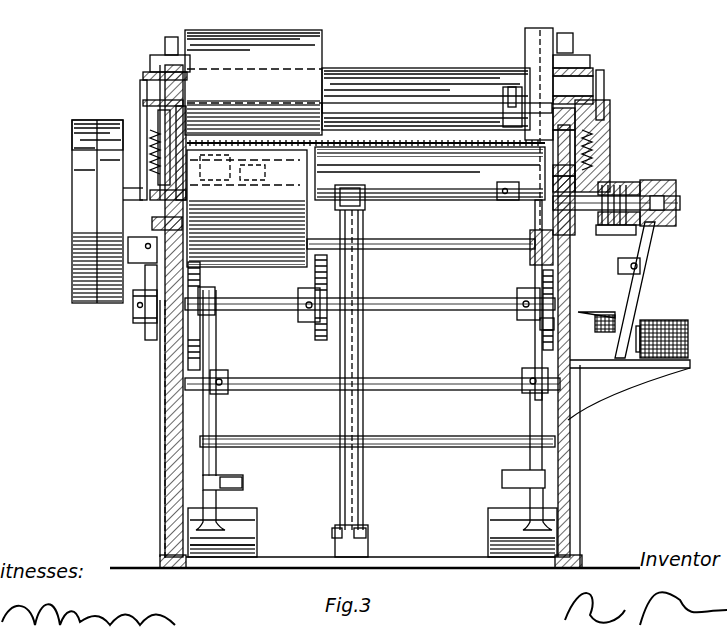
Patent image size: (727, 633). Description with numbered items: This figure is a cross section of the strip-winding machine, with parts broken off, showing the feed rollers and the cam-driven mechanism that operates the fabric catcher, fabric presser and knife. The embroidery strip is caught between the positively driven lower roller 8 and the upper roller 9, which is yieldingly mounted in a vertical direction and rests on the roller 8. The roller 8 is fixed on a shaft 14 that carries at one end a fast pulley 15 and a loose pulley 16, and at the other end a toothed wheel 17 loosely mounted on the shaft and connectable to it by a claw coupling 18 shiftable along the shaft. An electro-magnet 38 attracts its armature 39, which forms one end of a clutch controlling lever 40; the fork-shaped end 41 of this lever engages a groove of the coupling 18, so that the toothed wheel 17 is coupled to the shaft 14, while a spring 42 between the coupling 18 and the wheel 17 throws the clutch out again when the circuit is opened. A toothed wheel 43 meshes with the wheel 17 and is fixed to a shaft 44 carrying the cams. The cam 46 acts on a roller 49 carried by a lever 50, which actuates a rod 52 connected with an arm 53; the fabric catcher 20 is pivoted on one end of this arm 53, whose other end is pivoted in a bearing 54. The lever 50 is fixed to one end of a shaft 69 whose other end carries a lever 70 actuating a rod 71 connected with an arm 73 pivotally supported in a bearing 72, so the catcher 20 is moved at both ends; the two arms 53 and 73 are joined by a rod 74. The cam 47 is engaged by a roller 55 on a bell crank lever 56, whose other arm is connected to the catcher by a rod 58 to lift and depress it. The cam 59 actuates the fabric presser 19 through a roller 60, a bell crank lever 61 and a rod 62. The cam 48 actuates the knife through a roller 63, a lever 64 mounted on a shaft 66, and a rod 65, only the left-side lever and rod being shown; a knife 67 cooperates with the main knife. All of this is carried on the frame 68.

The roller 8 is at (275, 225).
The roller 9 is at (222, 38).
The shaft 14 is at (680, 203).
The fast pulley 15 is at (98, 175).
The loose pulley 16 is at (75, 147).
The toothed wheel 17 is at (605, 128).
The claw coupling 18 is at (645, 182).
The fabric presser 19 is at (458, 110).
The fabric catcher 20 is at (450, 170).
The electro-magnet 38 is at (690, 332).
The armature 39 is at (630, 370).
The clutch controlling lever 40 is at (636, 300).
The fork-shaped end 41 is at (650, 240).
The spring 42 is at (620, 182).
The toothed wheel 43 is at (604, 334).
The shaft 44 is at (425, 312).
The cam 46 is at (200, 350).
The cam 47 is at (322, 330).
The cam 48 is at (150, 338).
The roller 49 is at (177, 338).
The lever 50 is at (215, 420).
The rod 52 is at (244, 482).
The arm 53 is at (205, 280).
The bearing 54 is at (250, 537).
The roller 55 is at (320, 296).
The bell crank lever 56 is at (340, 412).
The rod 58 is at (364, 488).
The cam 59 is at (542, 342).
The roller 60 is at (538, 326).
The bell crank lever 61 is at (532, 272).
The rod 62 is at (505, 198).
The roller 63 is at (145, 275).
The lever 64 is at (138, 262).
The rod 65 is at (142, 96).
The shaft 66 is at (432, 252).
The knife 67 is at (392, 170).
The frame 68 is at (168, 448).
The shaft 69 is at (420, 390).
The lever 70 is at (530, 416).
The rod 71 is at (332, 78).
The bearing 72 is at (490, 532).
The arm 73 is at (530, 372).
The rod 74 is at (345, 195).